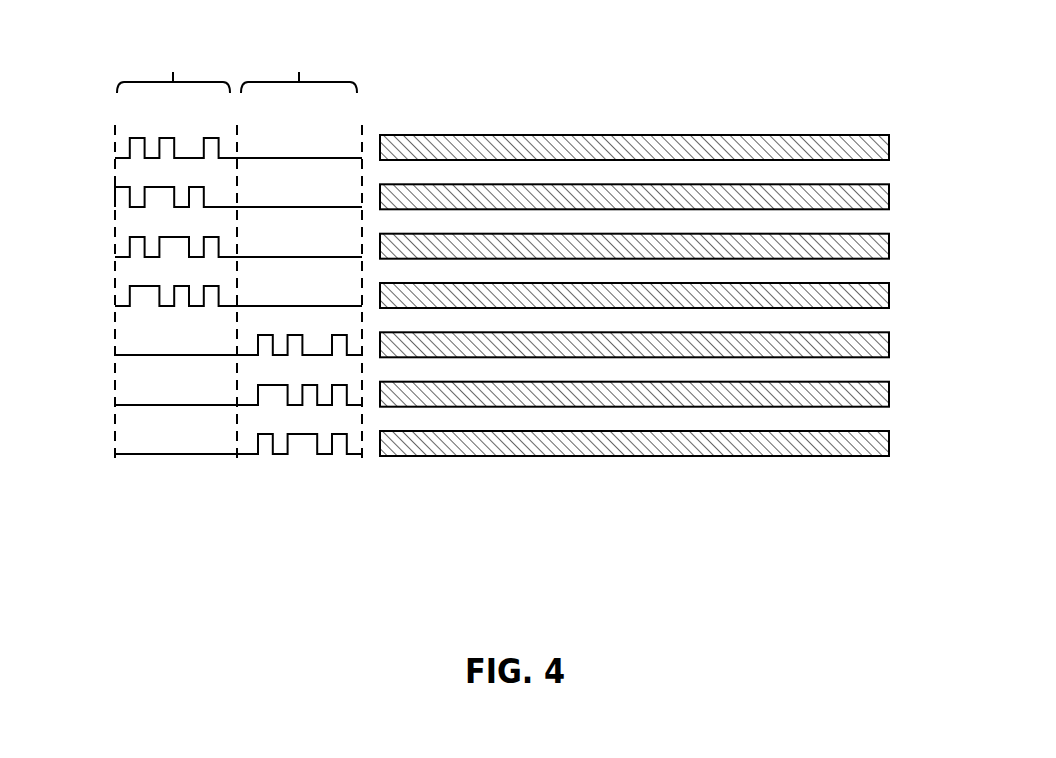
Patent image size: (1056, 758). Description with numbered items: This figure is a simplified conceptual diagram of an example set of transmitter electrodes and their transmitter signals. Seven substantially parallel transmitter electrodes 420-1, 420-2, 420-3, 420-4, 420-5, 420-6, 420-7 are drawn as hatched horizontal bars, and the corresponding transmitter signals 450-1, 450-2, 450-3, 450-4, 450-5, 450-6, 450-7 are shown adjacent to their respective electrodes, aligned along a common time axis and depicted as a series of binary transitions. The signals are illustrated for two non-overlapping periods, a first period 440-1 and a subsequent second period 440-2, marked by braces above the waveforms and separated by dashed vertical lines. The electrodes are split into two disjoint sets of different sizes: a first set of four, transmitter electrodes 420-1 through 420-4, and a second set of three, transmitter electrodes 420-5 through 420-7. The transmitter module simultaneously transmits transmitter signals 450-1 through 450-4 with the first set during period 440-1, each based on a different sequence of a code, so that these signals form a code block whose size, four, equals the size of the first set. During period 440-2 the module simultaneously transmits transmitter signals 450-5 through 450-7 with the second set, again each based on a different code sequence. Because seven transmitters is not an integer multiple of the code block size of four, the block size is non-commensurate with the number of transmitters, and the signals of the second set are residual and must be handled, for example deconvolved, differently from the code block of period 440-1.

The transmitter signal 450-1 is at (194, 149).
The transmitter signal 450-2 is at (194, 198).
The transmitter signal 450-3 is at (194, 248).
The transmitter signal 450-4 is at (194, 297).
The transmitter signal 450-5 is at (194, 346).
The transmitter signal 450-6 is at (194, 396).
The transmitter signal 450-7 is at (194, 445).
The transmitter electrode 420-1 is at (889, 146).
The transmitter electrode 420-2 is at (889, 196).
The transmitter electrode 420-3 is at (889, 245).
The transmitter electrode 420-4 is at (889, 294).
The transmitter electrode 420-5 is at (889, 344).
The transmitter electrode 420-6 is at (889, 393).
The transmitter electrode 420-7 is at (889, 442).
The period 440-1 is at (173, 62).
The period 440-2 is at (299, 62).